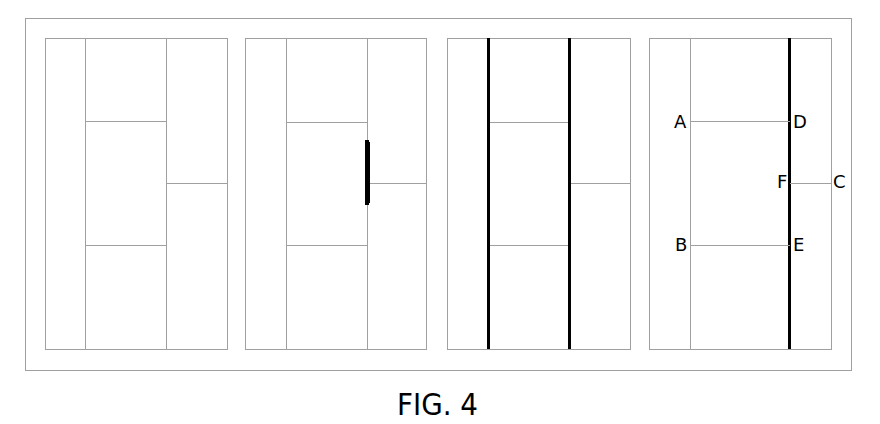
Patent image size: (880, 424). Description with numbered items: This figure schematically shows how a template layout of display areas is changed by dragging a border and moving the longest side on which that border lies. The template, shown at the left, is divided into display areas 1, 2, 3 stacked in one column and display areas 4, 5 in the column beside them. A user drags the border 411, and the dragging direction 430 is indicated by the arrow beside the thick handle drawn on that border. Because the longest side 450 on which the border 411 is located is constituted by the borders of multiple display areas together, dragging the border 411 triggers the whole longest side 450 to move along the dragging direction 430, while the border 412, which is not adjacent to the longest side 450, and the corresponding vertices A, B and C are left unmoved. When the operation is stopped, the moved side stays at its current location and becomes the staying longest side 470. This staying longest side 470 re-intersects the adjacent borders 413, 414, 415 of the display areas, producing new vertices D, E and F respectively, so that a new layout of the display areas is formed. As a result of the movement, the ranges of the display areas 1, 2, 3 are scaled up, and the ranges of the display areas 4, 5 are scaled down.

The display area 1 is at (126, 80).
The display area 2 is at (126, 184).
The display area 3 is at (126, 298).
The display area 4 is at (197, 111).
The display area 5 is at (197, 267).
The border 411 is at (367, 225).
The border 412 is at (488, 100).
The adjacent border 413 is at (730, 121).
The adjacent border 414 is at (729, 245).
The adjacent border 415 is at (810, 183).
The dragging direction 430 is at (396, 163).
The longest side 450 is at (569, 100).
The staying longest side 470 is at (789, 100).